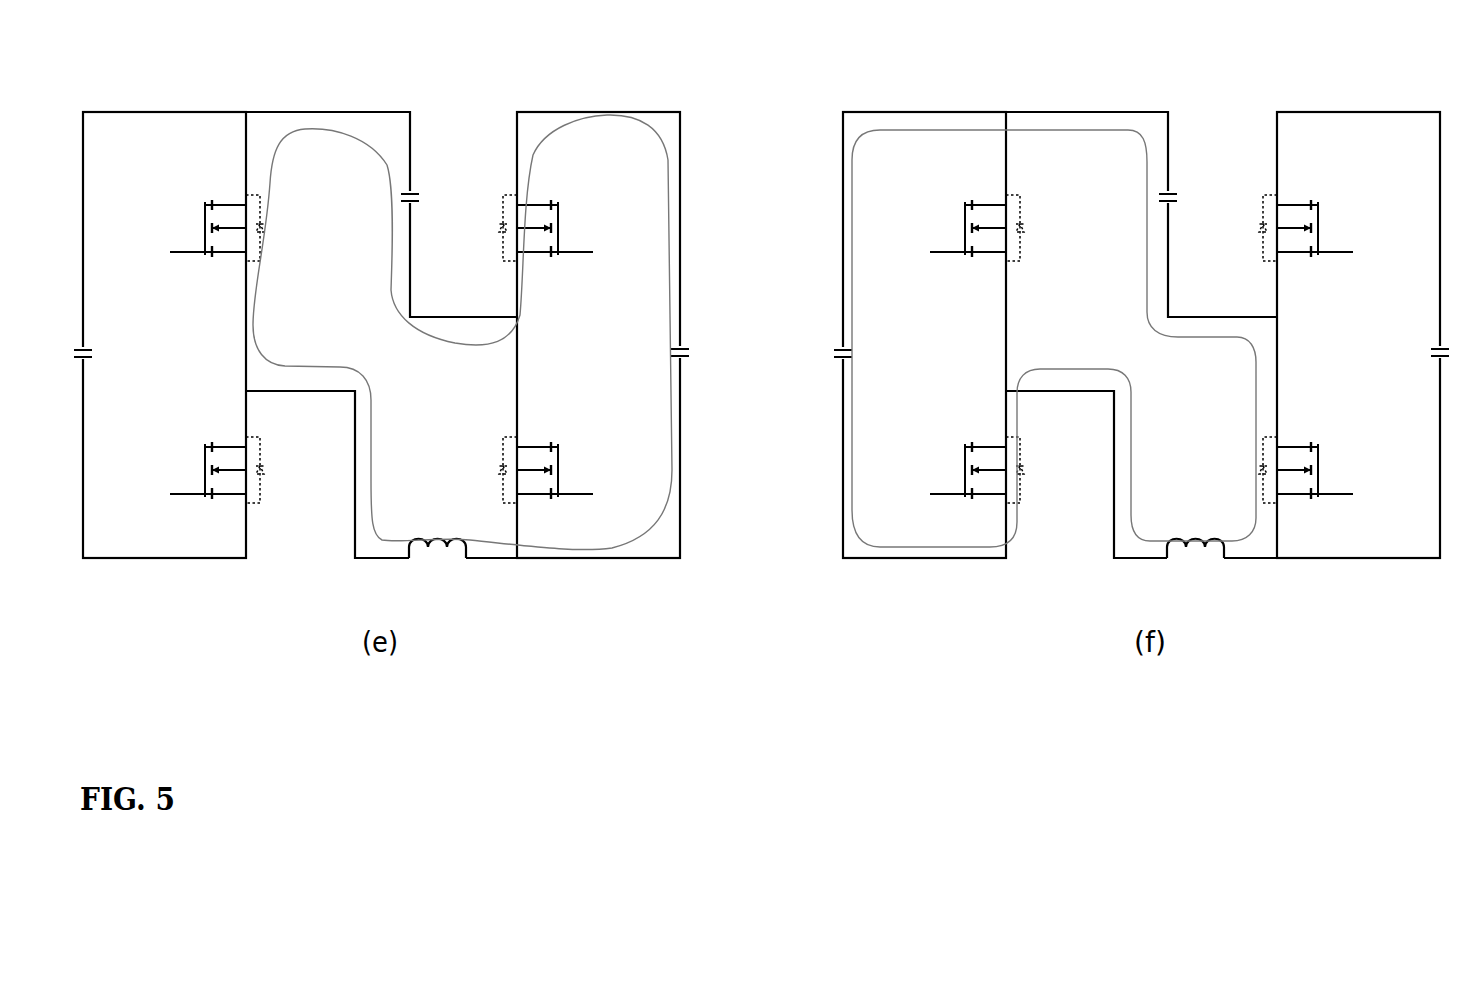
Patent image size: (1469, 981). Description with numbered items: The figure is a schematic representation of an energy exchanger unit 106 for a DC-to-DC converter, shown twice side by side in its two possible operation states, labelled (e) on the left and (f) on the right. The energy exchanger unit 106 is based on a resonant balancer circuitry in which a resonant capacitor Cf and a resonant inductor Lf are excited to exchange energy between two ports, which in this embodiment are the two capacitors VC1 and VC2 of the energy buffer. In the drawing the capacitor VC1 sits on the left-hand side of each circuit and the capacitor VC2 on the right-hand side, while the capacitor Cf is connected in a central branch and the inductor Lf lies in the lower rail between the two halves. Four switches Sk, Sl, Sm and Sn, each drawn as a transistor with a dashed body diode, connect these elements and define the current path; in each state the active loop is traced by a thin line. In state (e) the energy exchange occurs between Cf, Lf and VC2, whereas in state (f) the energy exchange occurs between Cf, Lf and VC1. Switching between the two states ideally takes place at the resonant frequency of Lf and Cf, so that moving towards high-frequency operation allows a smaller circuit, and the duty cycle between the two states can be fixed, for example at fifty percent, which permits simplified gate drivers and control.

The energy exchanger unit 106 is at (622, 112).
The switch Sk is at (595, 228).
The switch Sl is at (595, 470).
The switch Sm is at (932, 228).
The switch Sn is at (929, 470).
The resonant capacitor Cf is at (800, 188).
The resonant inductor Lf is at (816, 574).
The capacitor VC1 is at (494, 361).
The capacitor VC2 is at (1027, 361).